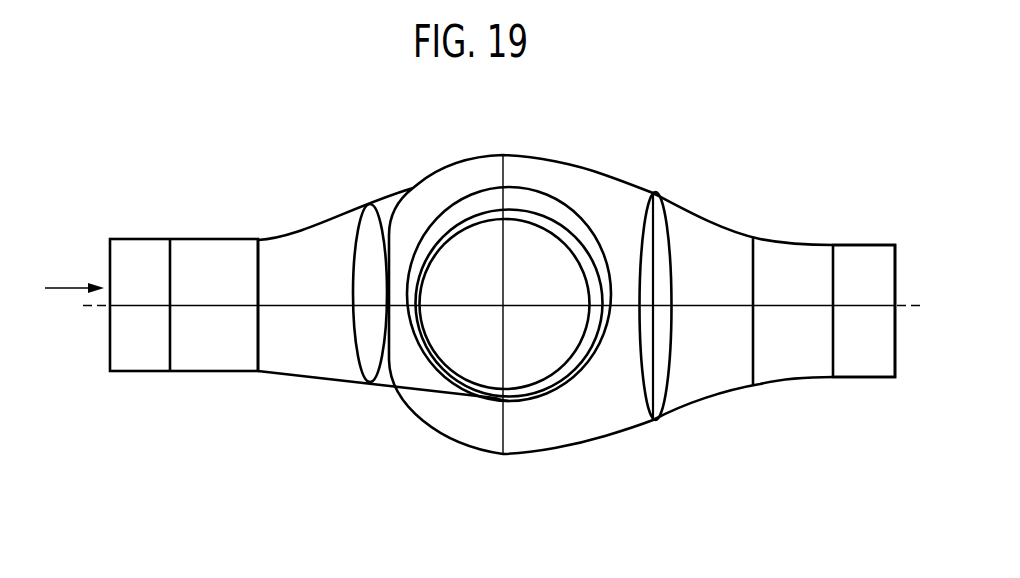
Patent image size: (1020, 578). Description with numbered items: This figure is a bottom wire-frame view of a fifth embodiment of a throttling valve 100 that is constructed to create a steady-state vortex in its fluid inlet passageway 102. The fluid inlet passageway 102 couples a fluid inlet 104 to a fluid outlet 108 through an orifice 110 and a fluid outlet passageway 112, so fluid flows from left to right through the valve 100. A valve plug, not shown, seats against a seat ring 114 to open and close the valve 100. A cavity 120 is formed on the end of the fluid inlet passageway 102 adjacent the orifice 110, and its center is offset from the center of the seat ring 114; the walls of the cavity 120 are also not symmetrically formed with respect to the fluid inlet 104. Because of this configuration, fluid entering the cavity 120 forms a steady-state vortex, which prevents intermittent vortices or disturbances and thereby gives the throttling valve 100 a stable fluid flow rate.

The throttling valve 100 is at (391, 131).
The fluid inlet passageway 102 is at (325, 237).
The fluid inlet 104 is at (110, 256).
The fluid outlet 108 is at (896, 262).
The orifice 110 is at (545, 347).
The fluid outlet passageway 112 is at (703, 227).
The seat ring 114 is at (444, 231).
The cavity 120 is at (473, 200).